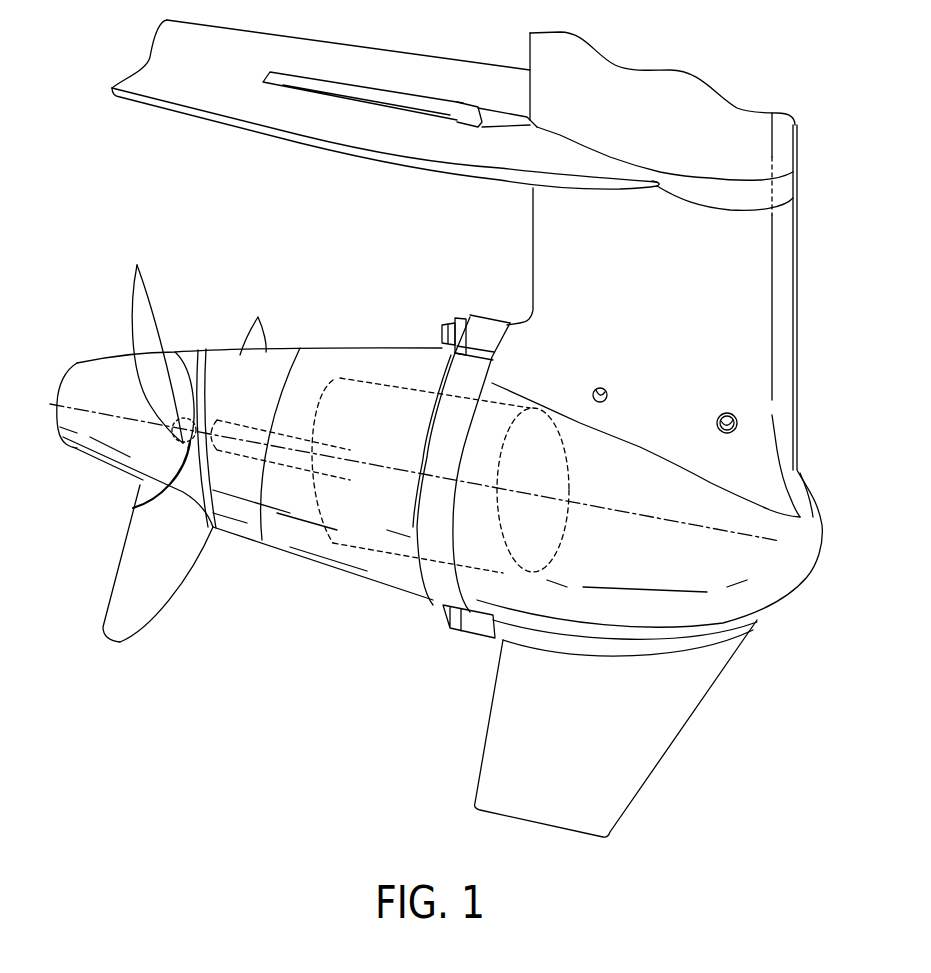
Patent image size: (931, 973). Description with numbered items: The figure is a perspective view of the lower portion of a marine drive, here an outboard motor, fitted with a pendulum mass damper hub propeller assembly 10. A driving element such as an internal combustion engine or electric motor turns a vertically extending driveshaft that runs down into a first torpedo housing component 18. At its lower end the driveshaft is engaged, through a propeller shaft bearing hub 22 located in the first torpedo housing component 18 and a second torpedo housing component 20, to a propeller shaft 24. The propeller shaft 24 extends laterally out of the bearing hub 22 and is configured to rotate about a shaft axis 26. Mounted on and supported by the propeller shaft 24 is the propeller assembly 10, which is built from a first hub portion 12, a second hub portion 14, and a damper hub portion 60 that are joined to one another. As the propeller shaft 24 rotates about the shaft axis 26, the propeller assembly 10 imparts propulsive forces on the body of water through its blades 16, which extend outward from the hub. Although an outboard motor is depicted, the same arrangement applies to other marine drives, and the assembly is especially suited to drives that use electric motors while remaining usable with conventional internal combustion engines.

The pendulum mass damper hub propeller assembly 10 is at (85, 128).
The first hub portion 12 is at (73, 448).
The second hub portion 14 is at (205, 362).
The blades 16 is at (138, 262).
The first torpedo housing component 18 is at (797, 291).
The second torpedo housing component 20 is at (375, 358).
The propeller shaft bearing hub 22 is at (378, 550).
The propeller shaft 24 is at (133, 508).
The shaft axis 26 is at (672, 522).
The damper hub portion 60 is at (247, 537).